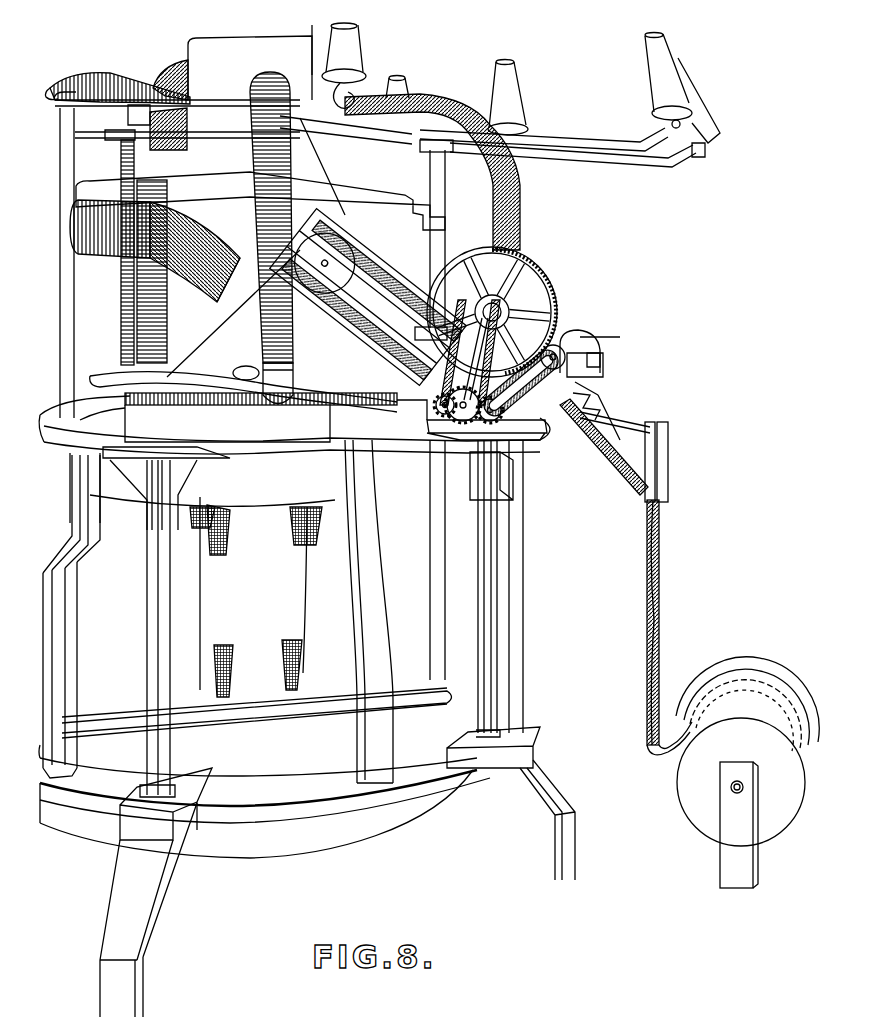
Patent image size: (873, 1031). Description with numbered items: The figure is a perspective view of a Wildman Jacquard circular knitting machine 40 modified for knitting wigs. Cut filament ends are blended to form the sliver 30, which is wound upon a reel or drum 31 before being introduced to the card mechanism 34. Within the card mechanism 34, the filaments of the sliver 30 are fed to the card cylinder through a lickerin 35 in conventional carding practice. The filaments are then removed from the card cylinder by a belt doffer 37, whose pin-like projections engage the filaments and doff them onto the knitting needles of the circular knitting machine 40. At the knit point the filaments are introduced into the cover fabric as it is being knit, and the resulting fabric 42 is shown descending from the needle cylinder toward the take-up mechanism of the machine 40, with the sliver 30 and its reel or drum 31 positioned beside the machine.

The sliver 30 is at (660, 614).
The reel or drum 31 is at (693, 767).
The card mechanism 34 is at (564, 279).
The lickerin 35 is at (600, 348).
The belt doffer 37 is at (385, 266).
The Wildman Jacquard circular knitting machine 40 is at (407, 490).
The fabric 42 is at (261, 609).